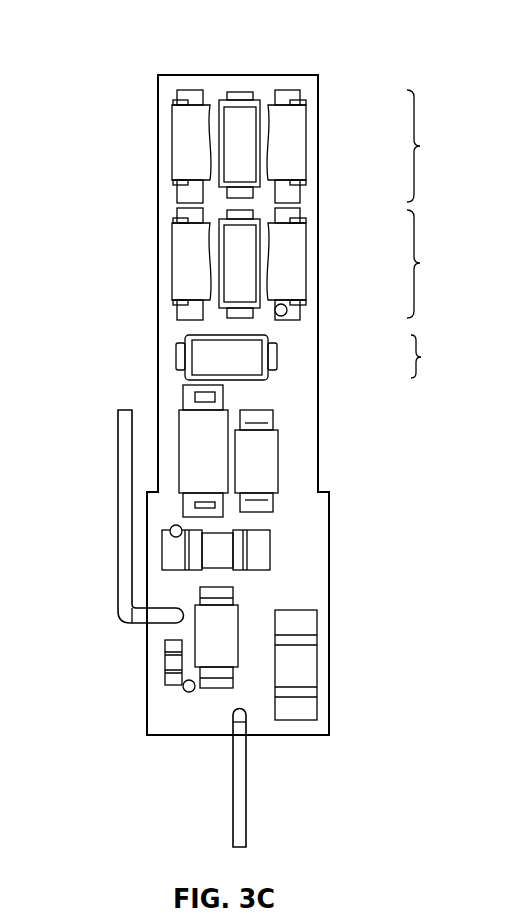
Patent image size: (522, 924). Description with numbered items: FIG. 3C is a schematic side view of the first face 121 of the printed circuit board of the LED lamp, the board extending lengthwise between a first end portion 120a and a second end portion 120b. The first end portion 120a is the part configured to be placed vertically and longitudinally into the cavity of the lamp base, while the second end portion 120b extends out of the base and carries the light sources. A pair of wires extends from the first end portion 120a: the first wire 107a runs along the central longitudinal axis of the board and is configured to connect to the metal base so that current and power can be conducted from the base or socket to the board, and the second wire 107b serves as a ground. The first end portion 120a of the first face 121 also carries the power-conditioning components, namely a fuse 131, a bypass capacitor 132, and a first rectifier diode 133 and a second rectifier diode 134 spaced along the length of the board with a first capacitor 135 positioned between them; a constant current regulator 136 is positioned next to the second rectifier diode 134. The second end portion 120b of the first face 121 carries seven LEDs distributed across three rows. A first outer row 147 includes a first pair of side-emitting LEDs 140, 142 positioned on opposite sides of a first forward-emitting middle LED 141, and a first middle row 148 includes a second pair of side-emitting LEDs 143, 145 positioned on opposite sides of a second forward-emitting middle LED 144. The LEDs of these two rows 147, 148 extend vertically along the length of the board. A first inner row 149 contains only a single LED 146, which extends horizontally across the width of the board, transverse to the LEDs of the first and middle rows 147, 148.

The first wire 107a is at (245, 780).
The second wire 107b is at (118, 515).
The first end portion 120a is at (165, 718).
The second end portion 120b is at (320, 85).
The first face 121 is at (297, 388).
The fuse 131 is at (302, 667).
The bypass capacitor 132 is at (170, 665).
The first rectifier diode 133 is at (218, 626).
The second rectifier diode 134 is at (258, 463).
The first capacitor 135 is at (218, 546).
The constant current regulator 136 is at (190, 422).
The side-emitting LED 140 is at (178, 132).
The first forward-emitting middle LED 141 is at (233, 117).
The side-emitting LED 142 is at (298, 130).
The side-emitting LED 143 is at (298, 243).
The second forward-emitting middle LED 144 is at (238, 243).
The side-emitting LED 145 is at (178, 243).
The single LED 146 is at (250, 353).
The first outer row 147 is at (437, 146).
The first middle row 148 is at (437, 264).
The first inner row 149 is at (439, 356).